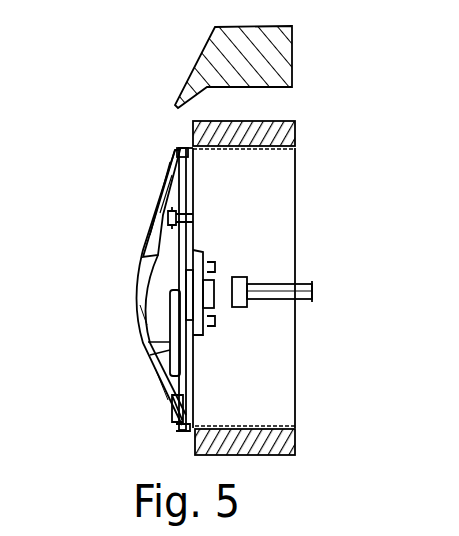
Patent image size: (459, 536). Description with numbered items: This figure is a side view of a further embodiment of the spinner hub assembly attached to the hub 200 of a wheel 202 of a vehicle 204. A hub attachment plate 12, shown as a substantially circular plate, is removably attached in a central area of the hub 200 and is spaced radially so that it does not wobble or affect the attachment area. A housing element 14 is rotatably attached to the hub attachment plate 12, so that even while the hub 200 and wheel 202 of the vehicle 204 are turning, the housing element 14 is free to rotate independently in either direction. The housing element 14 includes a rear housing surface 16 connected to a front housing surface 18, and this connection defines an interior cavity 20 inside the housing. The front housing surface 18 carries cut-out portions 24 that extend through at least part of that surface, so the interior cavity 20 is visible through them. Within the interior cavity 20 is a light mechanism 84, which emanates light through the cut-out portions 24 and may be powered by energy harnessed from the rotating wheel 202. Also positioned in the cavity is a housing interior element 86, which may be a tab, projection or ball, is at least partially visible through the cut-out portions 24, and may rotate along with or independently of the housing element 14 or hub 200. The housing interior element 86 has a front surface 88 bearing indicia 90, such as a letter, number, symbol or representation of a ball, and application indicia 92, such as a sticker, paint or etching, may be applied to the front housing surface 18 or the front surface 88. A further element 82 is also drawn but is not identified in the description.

The hub attachment plate 12 is at (197, 320).
The housing element 14 is at (152, 168).
The rear housing surface 16 is at (178, 156).
The front housing surface 18 is at (134, 297).
The interior cavity 20 is at (138, 268).
The cut-out portions 24 is at (153, 240).
The bracket 82 is at (175, 405).
The light mechanism 84 is at (178, 217).
The housing interior element 86 is at (142, 312).
The front surface 88 is at (148, 342).
The indicia 90 is at (152, 383).
The application indicia 92 is at (178, 368).
The hub 200 is at (252, 227).
The wheel 202 is at (262, 122).
The vehicle 204 is at (217, 53).